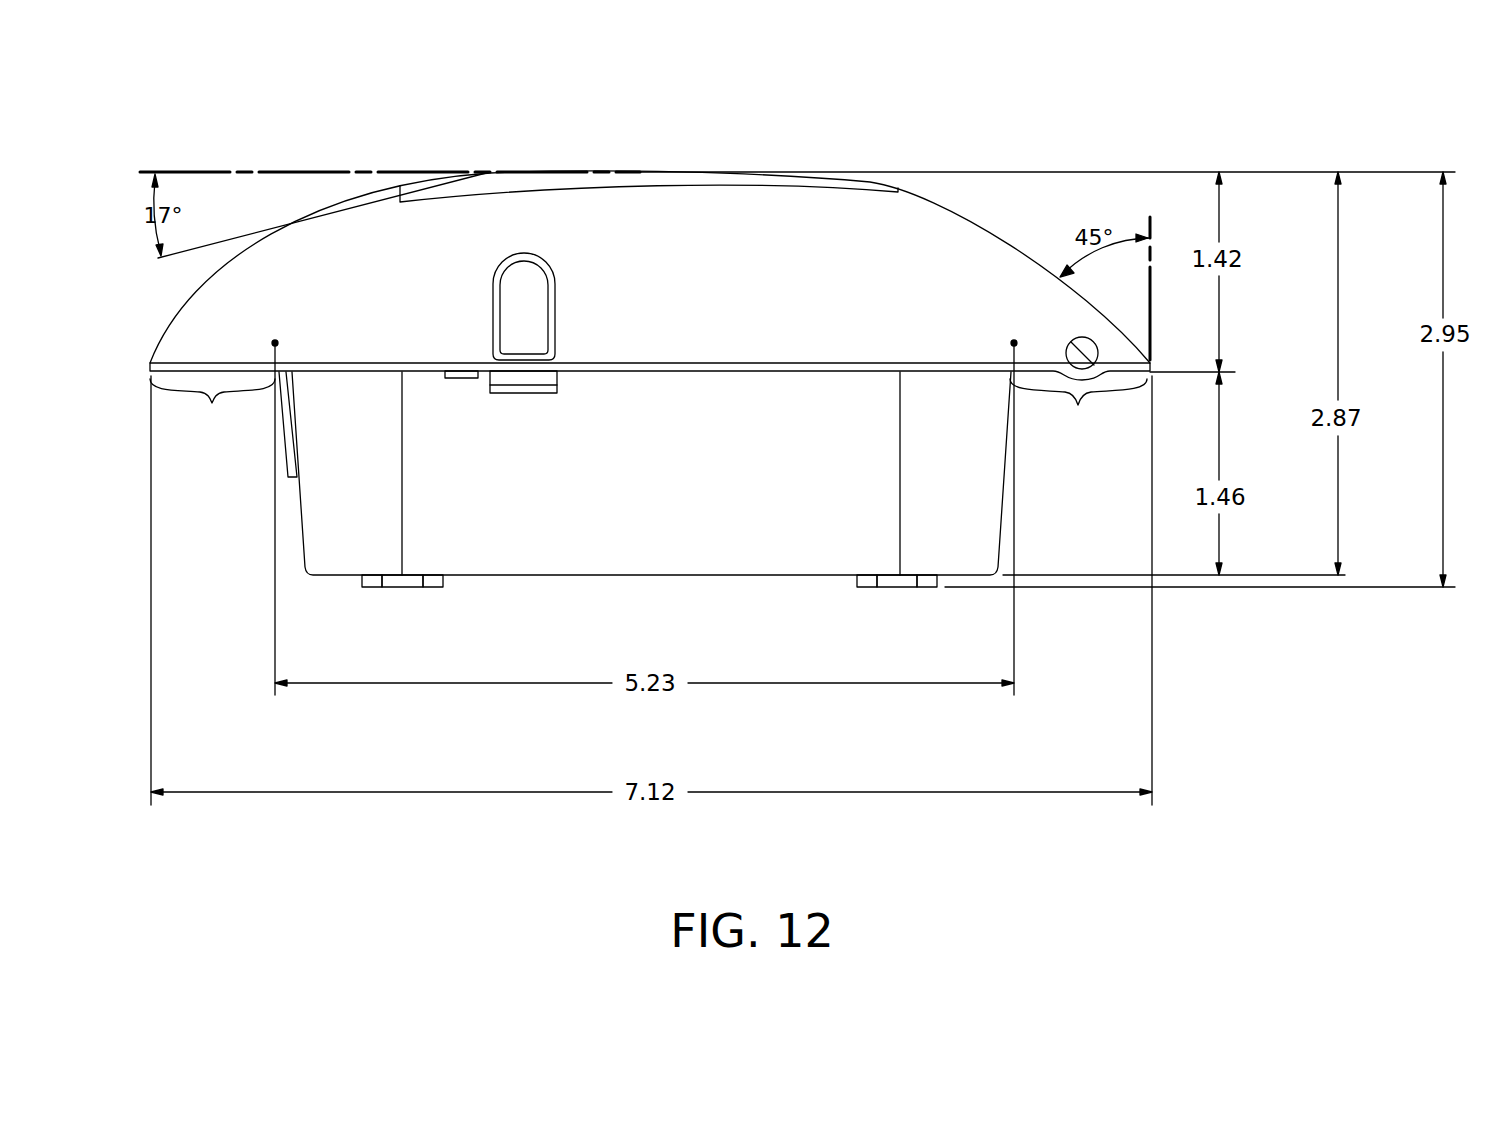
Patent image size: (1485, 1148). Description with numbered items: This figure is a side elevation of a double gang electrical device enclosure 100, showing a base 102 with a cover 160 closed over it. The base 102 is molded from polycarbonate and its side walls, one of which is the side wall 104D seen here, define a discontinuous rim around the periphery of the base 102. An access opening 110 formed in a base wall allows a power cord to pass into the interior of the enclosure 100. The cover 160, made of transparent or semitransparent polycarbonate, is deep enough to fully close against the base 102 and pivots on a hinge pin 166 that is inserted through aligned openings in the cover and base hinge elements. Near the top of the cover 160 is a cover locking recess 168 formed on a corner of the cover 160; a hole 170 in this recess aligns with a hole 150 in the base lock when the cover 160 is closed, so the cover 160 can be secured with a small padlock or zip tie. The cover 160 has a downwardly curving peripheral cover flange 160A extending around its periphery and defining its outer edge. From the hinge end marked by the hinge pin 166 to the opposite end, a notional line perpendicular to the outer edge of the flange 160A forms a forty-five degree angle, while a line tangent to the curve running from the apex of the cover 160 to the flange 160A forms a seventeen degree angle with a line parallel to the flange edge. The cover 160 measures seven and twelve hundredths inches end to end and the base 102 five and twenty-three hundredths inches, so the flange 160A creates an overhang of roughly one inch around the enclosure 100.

The double gang electrical device enclosure 100 is at (866, 145).
The base 102 is at (1005, 483).
The side wall 104D is at (622, 469).
The access opening 110 is at (283, 448).
The hole 150 is at (457, 420).
The cover 160 is at (526, 135).
The peripheral cover flange 160A is at (648, 408).
The hinge pin 166 is at (1080, 340).
The cover locking recess 168 is at (523, 277).
The hole 170 is at (457, 420).